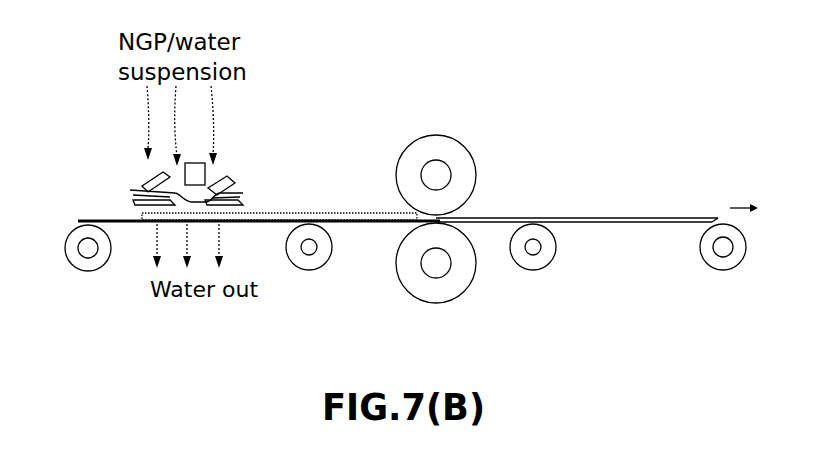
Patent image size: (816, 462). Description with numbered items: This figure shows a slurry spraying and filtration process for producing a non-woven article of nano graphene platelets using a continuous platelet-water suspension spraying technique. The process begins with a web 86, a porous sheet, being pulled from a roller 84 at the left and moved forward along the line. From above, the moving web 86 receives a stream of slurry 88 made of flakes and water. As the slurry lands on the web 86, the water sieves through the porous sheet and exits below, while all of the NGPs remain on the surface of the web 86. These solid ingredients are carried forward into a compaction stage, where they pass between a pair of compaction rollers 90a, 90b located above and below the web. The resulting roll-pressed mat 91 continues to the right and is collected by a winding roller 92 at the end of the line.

The roller 84 is at (73, 230).
The web 86 is at (127, 224).
The stream of slurry 88 is at (143, 185).
The compaction roller 90a is at (412, 147).
The compaction roller 90b is at (422, 287).
The roll-pressed mat 91 is at (567, 215).
The winding roller 92 is at (720, 270).